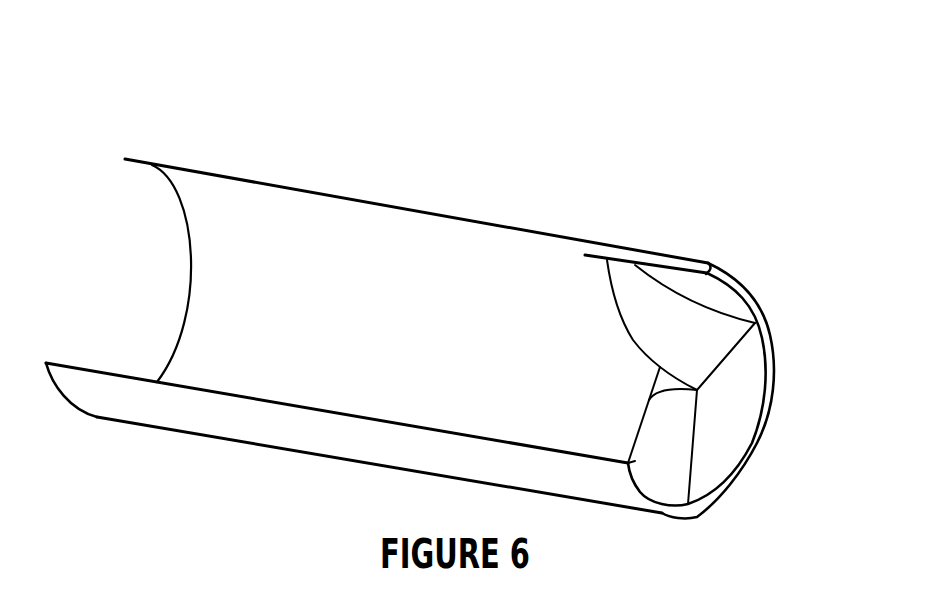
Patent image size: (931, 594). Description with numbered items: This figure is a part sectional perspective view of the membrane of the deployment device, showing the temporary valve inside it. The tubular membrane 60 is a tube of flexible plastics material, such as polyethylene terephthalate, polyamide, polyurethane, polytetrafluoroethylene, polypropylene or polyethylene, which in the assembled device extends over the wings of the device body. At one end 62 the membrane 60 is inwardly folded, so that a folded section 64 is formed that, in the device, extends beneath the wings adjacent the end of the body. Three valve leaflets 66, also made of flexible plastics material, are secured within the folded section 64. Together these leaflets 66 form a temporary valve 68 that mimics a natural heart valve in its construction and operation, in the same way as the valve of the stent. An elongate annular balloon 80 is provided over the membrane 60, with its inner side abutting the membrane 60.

The tubular membrane 60 is at (295, 189).
The end 62 is at (740, 475).
The folded section 64 is at (672, 268).
The valve leaflets 66 is at (715, 332).
The temporary valve 68 is at (718, 427).
The elongate annular balloon 80 is at (357, 157).